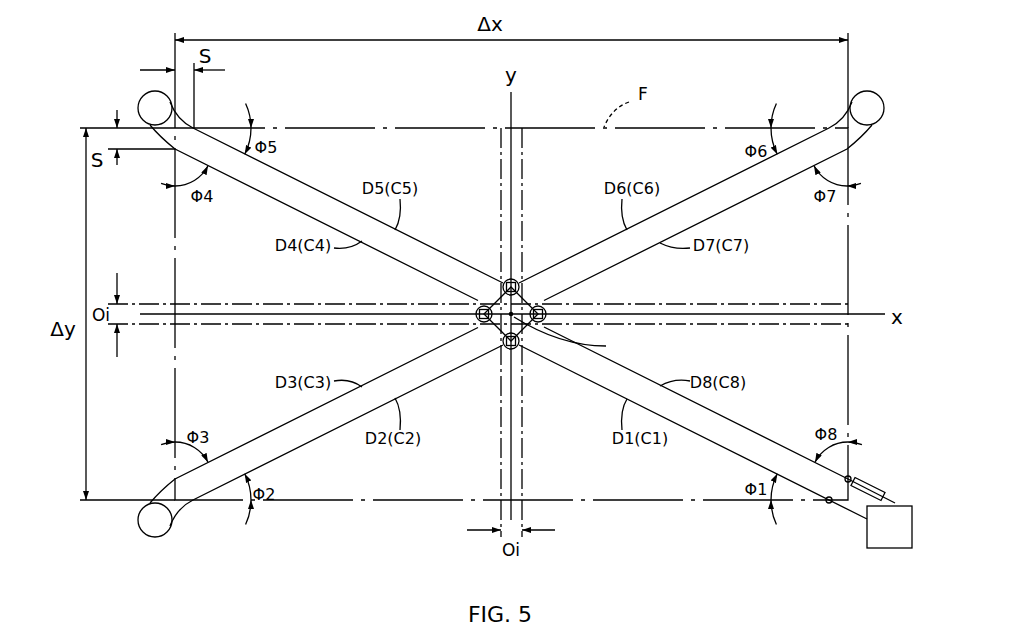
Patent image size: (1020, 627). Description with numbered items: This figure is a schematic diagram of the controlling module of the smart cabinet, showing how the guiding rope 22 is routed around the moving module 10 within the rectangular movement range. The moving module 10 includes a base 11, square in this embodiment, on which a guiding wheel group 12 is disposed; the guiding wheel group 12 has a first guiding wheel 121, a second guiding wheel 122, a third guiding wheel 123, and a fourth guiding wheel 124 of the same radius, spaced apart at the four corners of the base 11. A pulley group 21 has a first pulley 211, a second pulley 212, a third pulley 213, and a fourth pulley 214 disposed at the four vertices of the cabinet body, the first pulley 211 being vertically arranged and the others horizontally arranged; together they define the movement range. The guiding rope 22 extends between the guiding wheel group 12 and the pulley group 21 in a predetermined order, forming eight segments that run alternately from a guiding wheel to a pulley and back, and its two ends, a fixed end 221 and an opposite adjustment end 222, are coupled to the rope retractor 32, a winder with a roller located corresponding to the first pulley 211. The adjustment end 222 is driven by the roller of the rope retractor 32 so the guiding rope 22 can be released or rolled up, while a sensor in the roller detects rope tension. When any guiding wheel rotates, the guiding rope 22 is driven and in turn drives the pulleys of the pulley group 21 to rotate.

The moving module 10 is at (510, 302).
The base 11 is at (501, 325).
The guiding wheel group 12 is at (477, 311).
The first guiding wheel 121 is at (521, 347).
The second guiding wheel 122 is at (477, 318).
The third guiding wheel 123 is at (505, 282).
The fourth guiding wheel 124 is at (546, 311).
The pulley group 21 is at (891, 135).
The first pulley 211 is at (868, 489).
The second pulley 212 is at (155, 520).
The third pulley 213 is at (155, 108).
The fourth pulley 214 is at (867, 108).
The guiding rope 22 is at (748, 411).
The fixed end 221 is at (854, 516).
The adjustment end 222 is at (898, 491).
The rope retractor 32 is at (888, 528).